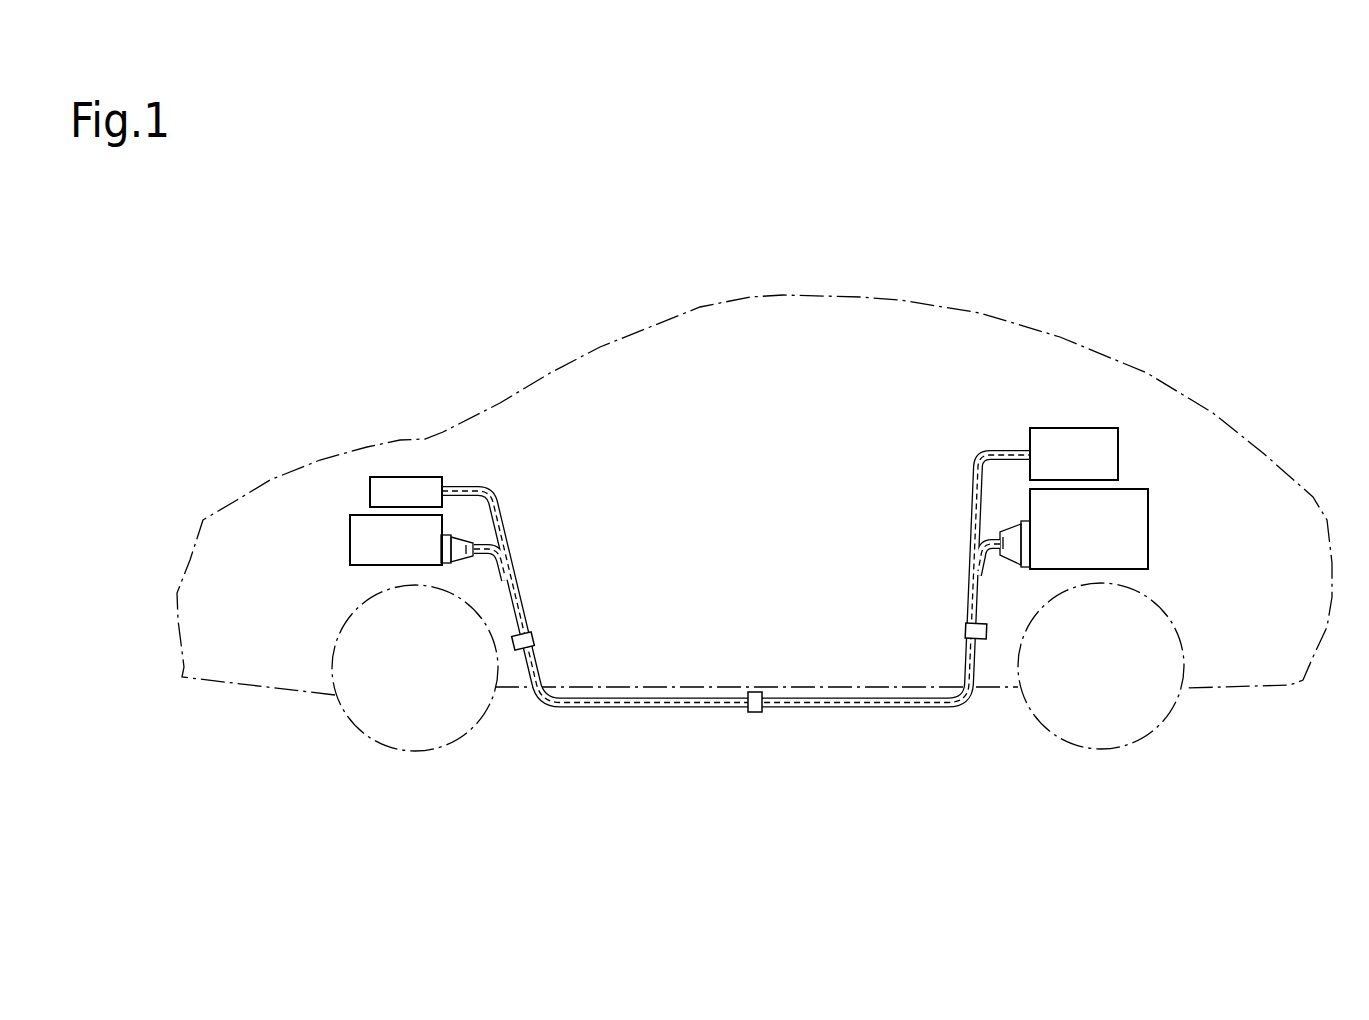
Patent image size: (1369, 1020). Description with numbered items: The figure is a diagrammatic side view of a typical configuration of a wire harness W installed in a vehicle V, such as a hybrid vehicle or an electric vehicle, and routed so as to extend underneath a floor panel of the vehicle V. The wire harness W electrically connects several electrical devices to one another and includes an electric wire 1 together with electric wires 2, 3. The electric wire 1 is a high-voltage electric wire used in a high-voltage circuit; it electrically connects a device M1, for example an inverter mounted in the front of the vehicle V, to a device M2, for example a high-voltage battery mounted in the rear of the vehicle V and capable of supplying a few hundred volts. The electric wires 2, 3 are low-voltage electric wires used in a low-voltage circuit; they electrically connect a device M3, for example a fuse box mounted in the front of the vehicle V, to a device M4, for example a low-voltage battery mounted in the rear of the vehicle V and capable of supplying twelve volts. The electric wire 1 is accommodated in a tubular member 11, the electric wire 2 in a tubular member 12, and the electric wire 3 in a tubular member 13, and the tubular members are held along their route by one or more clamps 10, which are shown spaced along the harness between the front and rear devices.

The electric wire 1 is at (663, 703).
The electric wire 2 is at (463, 483).
The electric wire 3 is at (499, 473).
The clamp 10 is at (755, 712).
The tubular member 11 is at (838, 709).
The tubular member 12 is at (498, 507).
The tubular member 13 is at (550, 590).
The device M1 is at (350, 540).
The device M2 is at (1148, 531).
The device M3 is at (370, 490).
The device M4 is at (1118, 455).
The vehicle V is at (1062, 336).
The wire harness W is at (942, 436).